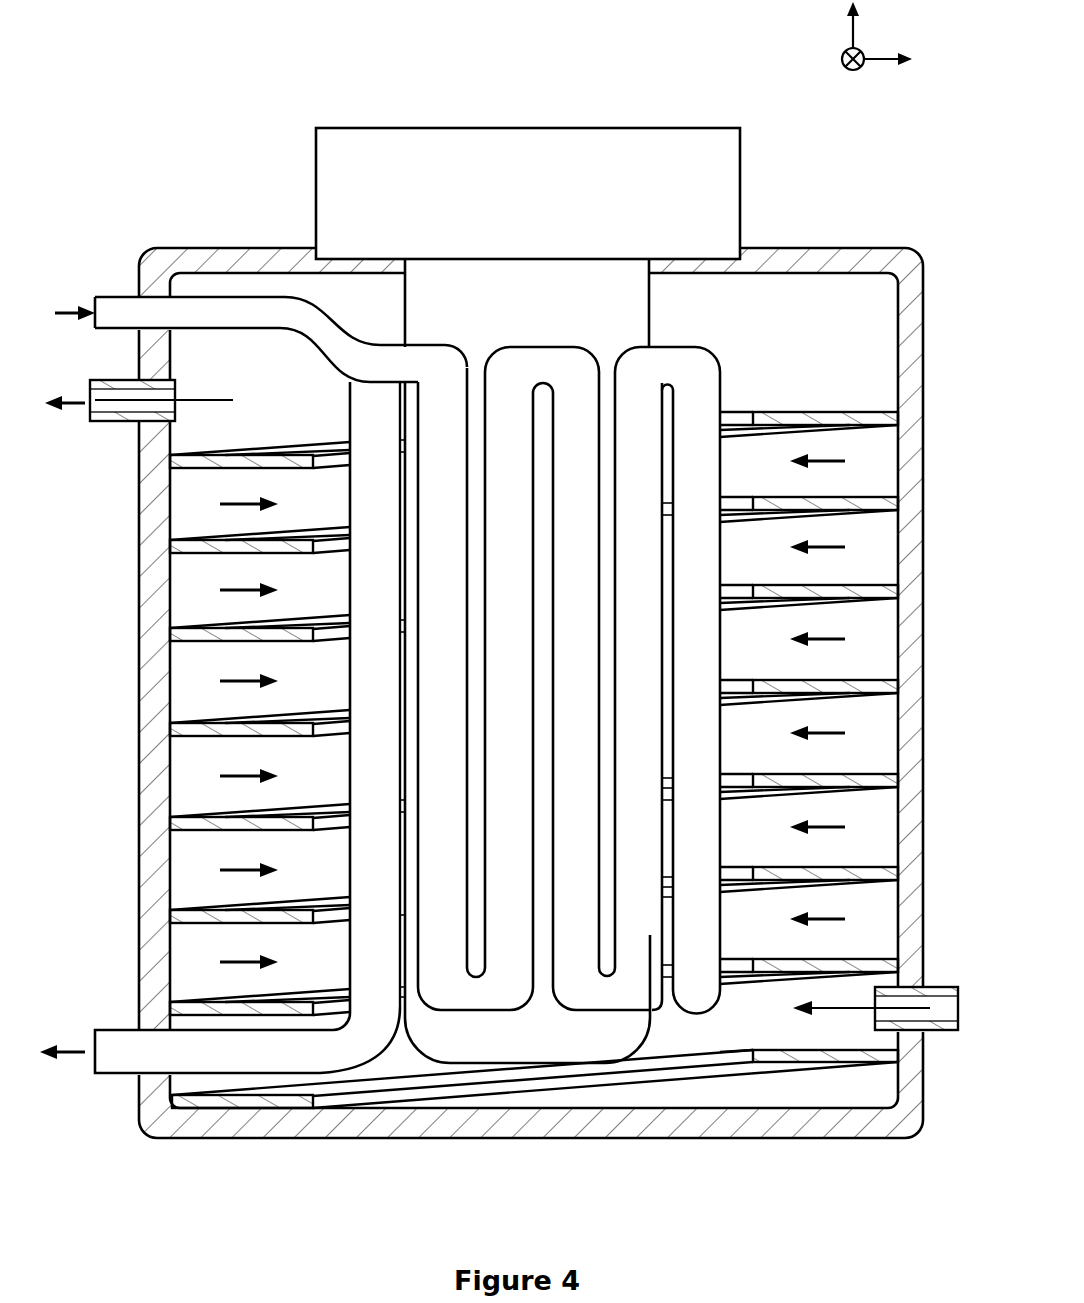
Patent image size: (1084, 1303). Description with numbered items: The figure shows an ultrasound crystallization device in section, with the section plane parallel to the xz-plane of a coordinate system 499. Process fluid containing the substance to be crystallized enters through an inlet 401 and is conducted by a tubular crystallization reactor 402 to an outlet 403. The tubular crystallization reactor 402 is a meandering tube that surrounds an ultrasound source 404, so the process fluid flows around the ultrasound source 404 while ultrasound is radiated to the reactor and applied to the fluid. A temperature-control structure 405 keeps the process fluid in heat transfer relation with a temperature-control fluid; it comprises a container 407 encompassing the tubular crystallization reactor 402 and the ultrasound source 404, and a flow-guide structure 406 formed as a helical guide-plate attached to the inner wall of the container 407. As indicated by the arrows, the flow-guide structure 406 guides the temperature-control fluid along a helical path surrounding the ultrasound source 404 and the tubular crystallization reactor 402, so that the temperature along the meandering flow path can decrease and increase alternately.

The inlet 401 is at (108, 297).
The tubular crystallization reactor 402 is at (693, 347).
The outlet 403 is at (110, 1030).
The ultrasound source 404 is at (545, 323).
The temperature-control structure 405 is at (255, 378).
The flow-guide structure 406 is at (773, 412).
The container 407 is at (778, 248).
The coordinate system 499 is at (913, 37).